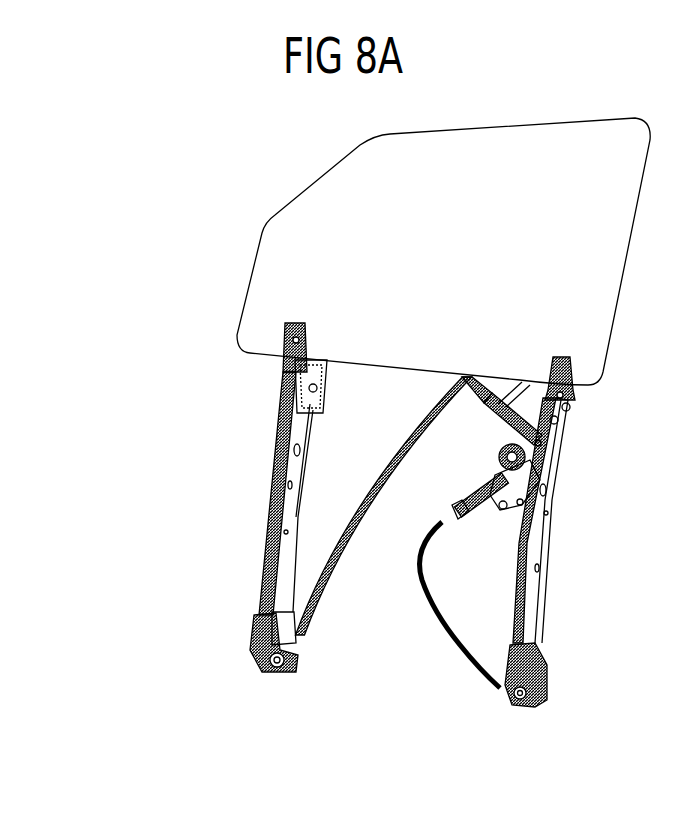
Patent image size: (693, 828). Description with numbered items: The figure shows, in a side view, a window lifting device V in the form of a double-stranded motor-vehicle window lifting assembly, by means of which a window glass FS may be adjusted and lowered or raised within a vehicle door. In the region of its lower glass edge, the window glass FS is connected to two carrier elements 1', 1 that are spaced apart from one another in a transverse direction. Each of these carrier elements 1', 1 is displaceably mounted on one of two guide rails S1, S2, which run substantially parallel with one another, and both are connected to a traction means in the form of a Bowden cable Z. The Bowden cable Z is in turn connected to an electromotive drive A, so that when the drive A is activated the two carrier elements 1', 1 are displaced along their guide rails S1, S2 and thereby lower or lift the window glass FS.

The window glass FS is at (471, 258).
The window lifting device V is at (257, 419).
The guide rail S1 is at (263, 540).
The guide rail S2 is at (548, 512).
The carrier element 1' is at (252, 330).
The carrier element 1 is at (602, 362).
The electromotive drive A is at (550, 445).
The Bowden cable Z is at (445, 630).